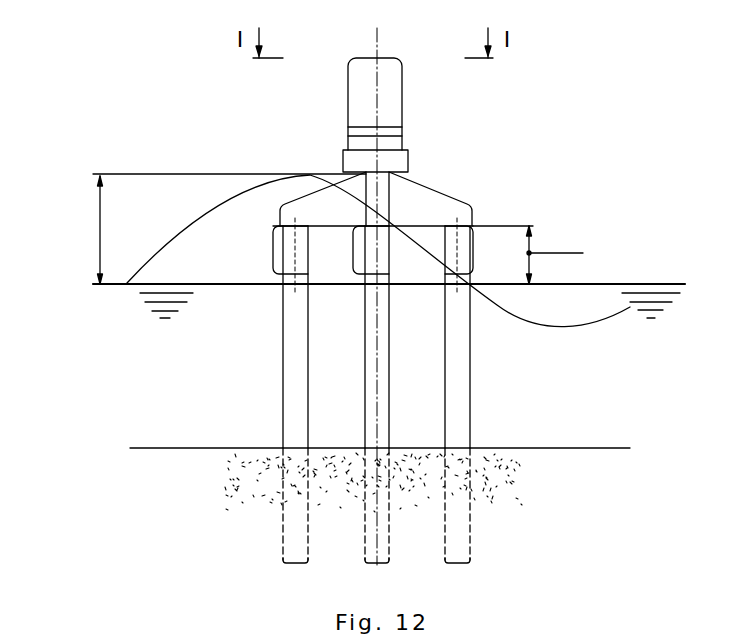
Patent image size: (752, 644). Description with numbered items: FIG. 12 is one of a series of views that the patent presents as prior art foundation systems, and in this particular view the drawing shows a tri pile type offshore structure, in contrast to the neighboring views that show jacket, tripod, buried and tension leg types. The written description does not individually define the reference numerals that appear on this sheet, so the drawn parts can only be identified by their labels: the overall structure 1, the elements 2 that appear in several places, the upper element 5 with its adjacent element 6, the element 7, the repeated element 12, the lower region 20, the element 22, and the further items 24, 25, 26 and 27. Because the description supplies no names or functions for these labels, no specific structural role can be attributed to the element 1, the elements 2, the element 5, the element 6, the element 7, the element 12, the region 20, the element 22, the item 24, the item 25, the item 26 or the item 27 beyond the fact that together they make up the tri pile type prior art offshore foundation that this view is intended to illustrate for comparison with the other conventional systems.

The pile foundation 1 is at (468, 137).
The pile 2 is at (297, 388).
The column 5 is at (387, 100).
The flange 6 is at (402, 130).
The pile cap 7 is at (352, 187).
The pile sleeve 12 is at (273, 256).
The bearing stratum 20 is at (500, 472).
The connecting section 22 is at (357, 160).
The sleeve height above water level 24 is at (529, 255).
The cap height above water level 25 is at (100, 231).
The water level 26 is at (583, 283).
The cap bottom plate 27 is at (440, 221).